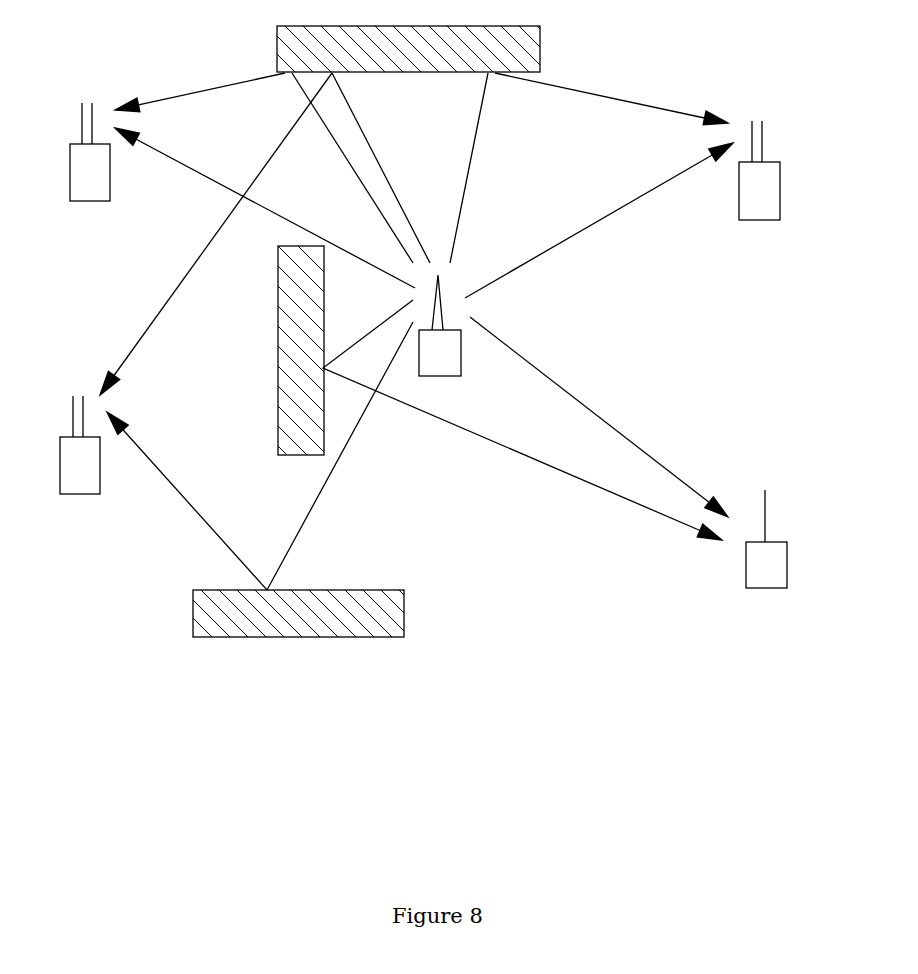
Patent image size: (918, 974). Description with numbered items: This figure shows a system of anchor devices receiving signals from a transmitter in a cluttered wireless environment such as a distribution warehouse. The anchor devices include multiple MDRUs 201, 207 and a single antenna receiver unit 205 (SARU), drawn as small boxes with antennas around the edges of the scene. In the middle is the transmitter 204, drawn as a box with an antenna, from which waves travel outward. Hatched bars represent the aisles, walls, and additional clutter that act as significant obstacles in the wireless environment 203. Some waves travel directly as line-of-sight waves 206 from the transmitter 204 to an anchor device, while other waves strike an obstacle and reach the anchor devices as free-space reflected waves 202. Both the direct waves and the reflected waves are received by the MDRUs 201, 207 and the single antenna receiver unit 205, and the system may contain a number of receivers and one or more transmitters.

The MDRU 201 is at (84, 207).
The free-space reflected waves 202 is at (310, 510).
The wireless environment obstacle 203 is at (403, 588).
The transmitter 204 is at (462, 352).
The single antenna receiver unit 205 is at (770, 503).
The direct, LOS waves 206 is at (557, 378).
The MDRU 207 is at (55, 450).